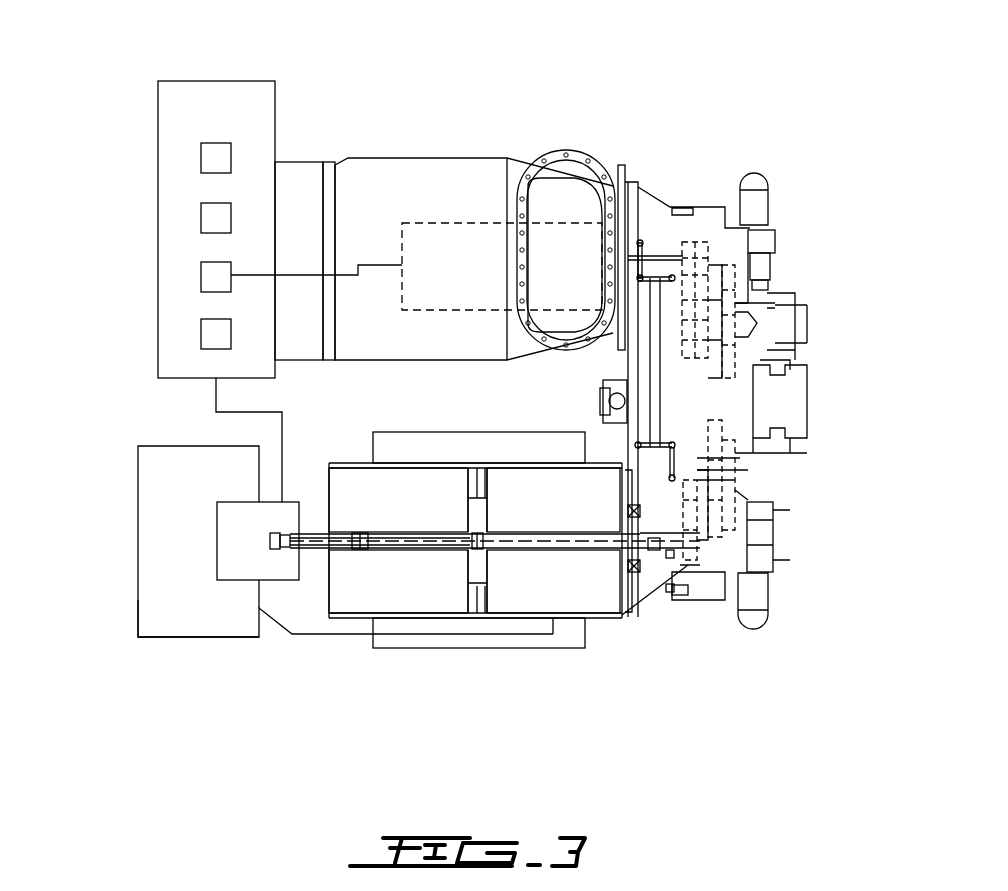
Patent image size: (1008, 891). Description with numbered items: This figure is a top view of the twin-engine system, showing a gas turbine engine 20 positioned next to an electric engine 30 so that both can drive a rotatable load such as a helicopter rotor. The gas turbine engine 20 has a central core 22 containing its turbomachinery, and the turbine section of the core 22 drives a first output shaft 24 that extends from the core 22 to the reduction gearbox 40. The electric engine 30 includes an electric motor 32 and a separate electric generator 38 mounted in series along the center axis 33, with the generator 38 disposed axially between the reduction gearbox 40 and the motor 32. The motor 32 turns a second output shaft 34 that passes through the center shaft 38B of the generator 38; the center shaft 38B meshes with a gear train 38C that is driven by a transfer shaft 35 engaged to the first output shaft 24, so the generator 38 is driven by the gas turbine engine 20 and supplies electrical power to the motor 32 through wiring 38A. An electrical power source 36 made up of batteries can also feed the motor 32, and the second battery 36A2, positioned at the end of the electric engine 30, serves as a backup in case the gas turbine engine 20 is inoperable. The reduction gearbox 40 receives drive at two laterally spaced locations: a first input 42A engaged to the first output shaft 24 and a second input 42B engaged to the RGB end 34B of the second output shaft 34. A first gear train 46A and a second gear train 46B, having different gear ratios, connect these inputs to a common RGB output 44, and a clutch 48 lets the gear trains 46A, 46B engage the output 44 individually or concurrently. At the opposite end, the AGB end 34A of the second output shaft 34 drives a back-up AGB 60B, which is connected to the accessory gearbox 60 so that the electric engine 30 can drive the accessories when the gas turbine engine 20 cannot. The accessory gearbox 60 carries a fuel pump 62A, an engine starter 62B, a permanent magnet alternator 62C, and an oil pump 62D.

The gas turbine engine 20 is at (352, 136).
The core 22 is at (438, 223).
The first output shaft 24 is at (640, 238).
The electric engine 30 is at (317, 617).
The electric motor 32 is at (365, 606).
The center axis 33 is at (647, 544).
The second output shaft 34 is at (503, 541).
The AGB end 34A is at (285, 502).
The RGB end 34B is at (682, 570).
The transfer shaft 35 is at (660, 395).
The electrical power source 36 is at (538, 641).
The second battery 36A2 is at (159, 633).
The electric generator 38 is at (591, 607).
The wiring 38A is at (503, 535).
The center shaft 38B is at (638, 568).
The gear train 38C is at (652, 460).
The reduction gearbox 40 is at (773, 181).
The first input 42A is at (690, 221).
The second input 42B is at (713, 554).
The RGB output 44 is at (815, 407).
The first gear train 46A is at (738, 252).
The second gear train 46B is at (746, 530).
The clutch 48 is at (733, 372).
The accessory gearbox 60 is at (165, 121).
The back-up AGB 60B is at (204, 522).
The fuel pump 62A is at (201, 333).
The engine starter 62B is at (201, 275).
The permanent magnet alternator 62C is at (201, 217).
The oil pump 62D is at (201, 157).